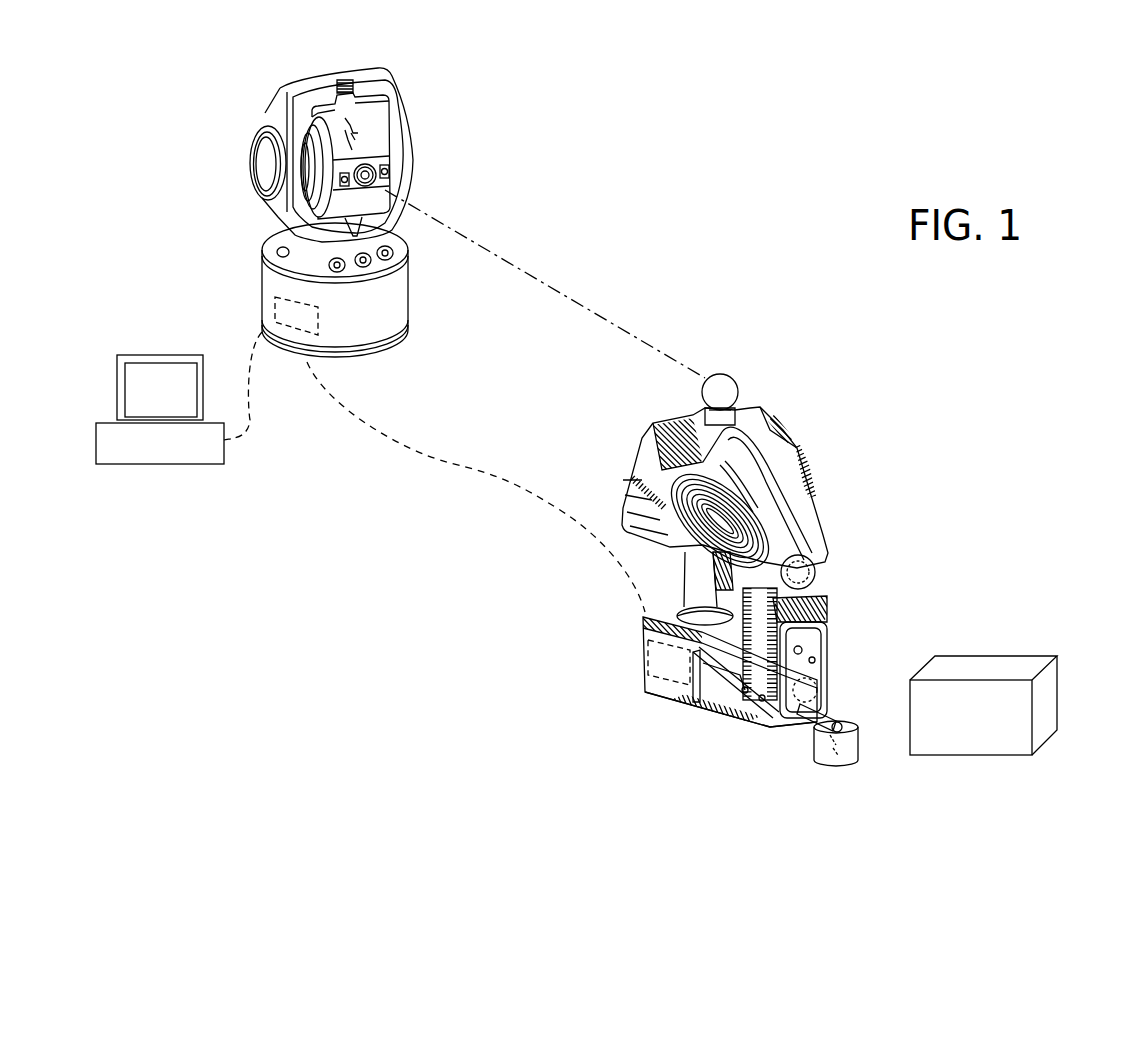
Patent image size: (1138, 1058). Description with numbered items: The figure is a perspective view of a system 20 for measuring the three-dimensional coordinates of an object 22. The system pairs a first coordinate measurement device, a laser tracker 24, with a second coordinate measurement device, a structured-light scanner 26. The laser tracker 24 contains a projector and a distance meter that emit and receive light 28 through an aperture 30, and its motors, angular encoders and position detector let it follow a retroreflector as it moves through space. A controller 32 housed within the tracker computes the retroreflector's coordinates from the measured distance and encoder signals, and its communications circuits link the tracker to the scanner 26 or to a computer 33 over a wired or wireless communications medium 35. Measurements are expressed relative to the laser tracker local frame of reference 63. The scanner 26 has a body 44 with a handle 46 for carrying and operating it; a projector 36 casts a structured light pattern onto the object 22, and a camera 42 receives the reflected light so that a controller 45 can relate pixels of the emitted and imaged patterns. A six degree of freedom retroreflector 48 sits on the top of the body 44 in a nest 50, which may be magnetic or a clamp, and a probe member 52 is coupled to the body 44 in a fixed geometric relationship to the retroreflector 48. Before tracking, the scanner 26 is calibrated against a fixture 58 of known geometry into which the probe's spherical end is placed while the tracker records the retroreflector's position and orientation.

The system 20 is at (720, 233).
The object 22 is at (1045, 688).
The laser tracker 24 is at (263, 258).
The scanner 26 is at (834, 533).
The light 28 is at (515, 267).
The aperture 30 is at (385, 165).
The controller 32 is at (278, 298).
The computer 33 is at (169, 464).
The communications medium 35 is at (467, 467).
The projector 36 is at (760, 730).
The camera 42 is at (818, 583).
The body 44 is at (647, 447).
The controller 45 is at (643, 662).
The handle 46 is at (660, 595).
The six degree of freedom retroreflector 48 is at (737, 380).
The nest 50 is at (705, 410).
The probe member 52 is at (822, 708).
The fixture 58 is at (845, 767).
The laser tracker local frame of reference 63 is at (345, 133).